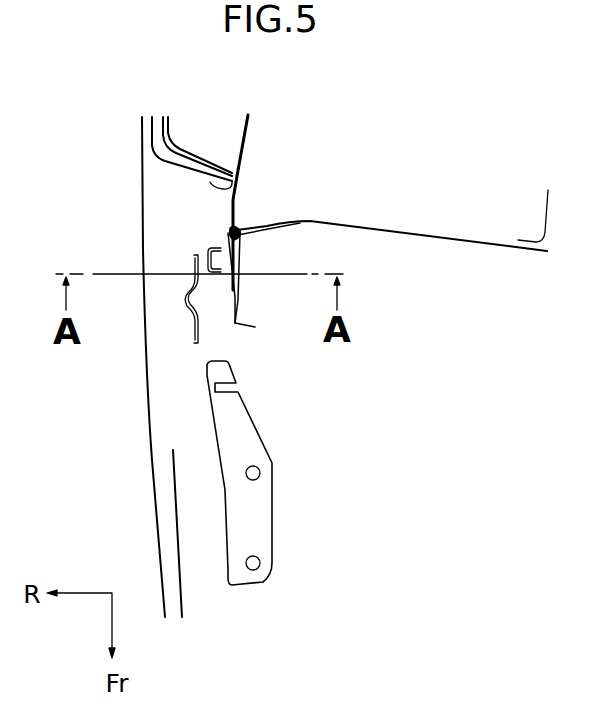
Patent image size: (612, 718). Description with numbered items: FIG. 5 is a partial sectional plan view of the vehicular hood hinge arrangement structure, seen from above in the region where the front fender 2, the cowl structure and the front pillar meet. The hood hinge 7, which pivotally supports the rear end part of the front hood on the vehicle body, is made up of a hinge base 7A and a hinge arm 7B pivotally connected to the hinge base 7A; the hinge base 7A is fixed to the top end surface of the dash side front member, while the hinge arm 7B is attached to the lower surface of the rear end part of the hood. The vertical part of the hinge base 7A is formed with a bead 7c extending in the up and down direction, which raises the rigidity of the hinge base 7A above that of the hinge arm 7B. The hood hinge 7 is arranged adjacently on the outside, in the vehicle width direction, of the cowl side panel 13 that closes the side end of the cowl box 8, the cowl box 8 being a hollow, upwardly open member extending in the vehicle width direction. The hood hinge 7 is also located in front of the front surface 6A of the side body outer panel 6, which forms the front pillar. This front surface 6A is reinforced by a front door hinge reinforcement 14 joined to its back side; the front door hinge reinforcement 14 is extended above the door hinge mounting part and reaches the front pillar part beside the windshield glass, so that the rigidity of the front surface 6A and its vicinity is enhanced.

The front fender 2 is at (153, 502).
The side body outer panel 6 is at (180, 170).
The front surface 6A is at (232, 182).
The hood hinge 7 is at (275, 473).
The hinge base 7A is at (192, 325).
The hinge arm 7B is at (265, 528).
The bead 7c is at (190, 288).
The cowl box 8 is at (467, 242).
The cowl side panel 13 is at (227, 233).
The front door hinge reinforcement 14 is at (168, 147).